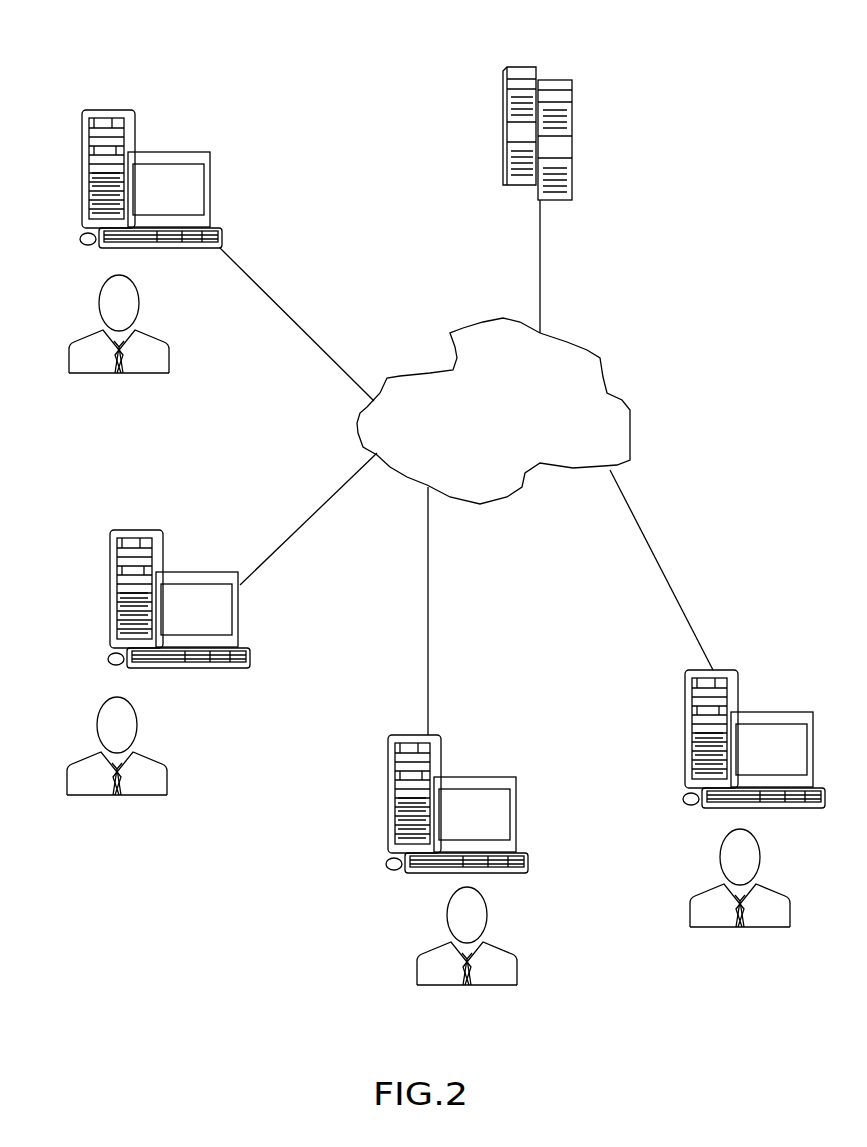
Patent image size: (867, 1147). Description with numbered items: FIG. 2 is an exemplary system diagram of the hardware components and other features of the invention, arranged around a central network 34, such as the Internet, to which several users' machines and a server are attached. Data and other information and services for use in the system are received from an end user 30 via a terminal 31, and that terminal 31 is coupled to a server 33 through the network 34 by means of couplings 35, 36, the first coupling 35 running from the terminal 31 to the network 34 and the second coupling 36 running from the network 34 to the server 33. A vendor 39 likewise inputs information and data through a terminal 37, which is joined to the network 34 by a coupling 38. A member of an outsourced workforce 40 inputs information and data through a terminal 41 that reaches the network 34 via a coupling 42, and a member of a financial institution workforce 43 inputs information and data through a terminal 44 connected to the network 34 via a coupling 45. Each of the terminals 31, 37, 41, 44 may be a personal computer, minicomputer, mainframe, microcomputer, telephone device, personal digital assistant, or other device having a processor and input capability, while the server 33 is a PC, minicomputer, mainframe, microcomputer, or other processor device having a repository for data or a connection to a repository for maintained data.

The end user 30 is at (83, 760).
The terminal 31 is at (110, 540).
The server 33 is at (567, 82).
The network 34 is at (453, 337).
The coupling 35 is at (311, 512).
The coupling 36 is at (538, 250).
The terminal 37 is at (403, 735).
The coupling 38 is at (428, 618).
The vendor 39 is at (427, 953).
The member of an outsourced workforce 40 is at (705, 897).
The terminal 41 is at (684, 680).
The coupling 42 is at (661, 567).
The member of a financial institution workforce 43 is at (83, 335).
The terminal 44 is at (84, 176).
The coupling 45 is at (262, 287).